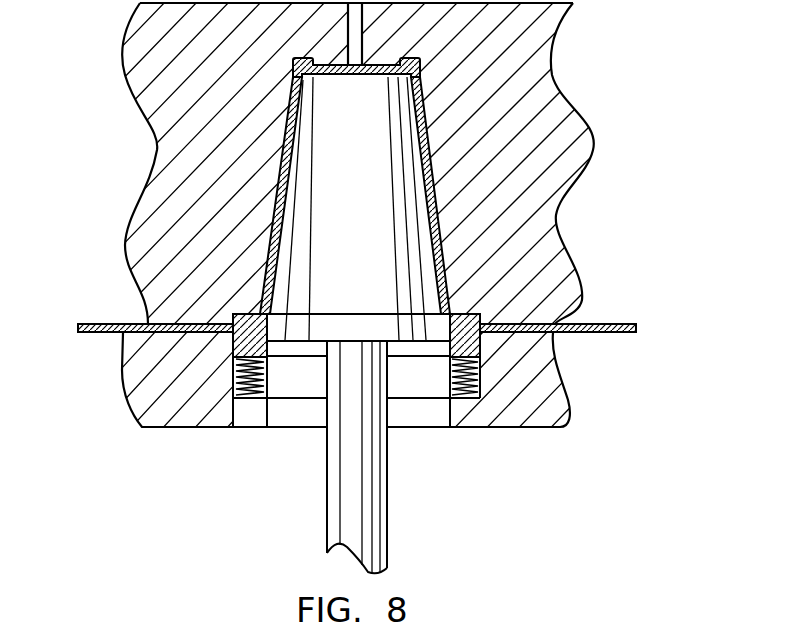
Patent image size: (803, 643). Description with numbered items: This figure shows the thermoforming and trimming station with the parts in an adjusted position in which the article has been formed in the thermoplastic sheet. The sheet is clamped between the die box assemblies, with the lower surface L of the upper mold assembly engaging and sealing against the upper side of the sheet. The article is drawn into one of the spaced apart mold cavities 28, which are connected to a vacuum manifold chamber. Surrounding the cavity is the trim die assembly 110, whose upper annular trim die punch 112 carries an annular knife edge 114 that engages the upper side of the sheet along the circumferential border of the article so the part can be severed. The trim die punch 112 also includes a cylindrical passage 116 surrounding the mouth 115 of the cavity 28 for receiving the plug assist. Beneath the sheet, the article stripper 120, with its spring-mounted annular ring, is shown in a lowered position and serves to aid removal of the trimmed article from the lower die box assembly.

The mold cavity 28 is at (353, 120).
The trim die assembly 110 is at (596, 314).
The trim die punch 112 is at (484, 316).
The annular knife edge 114 is at (227, 318).
The mouth 115 is at (443, 285).
The cylindrical passage 116 is at (457, 314).
The article stripper 120 is at (268, 389).
The lower surface L is at (148, 322).